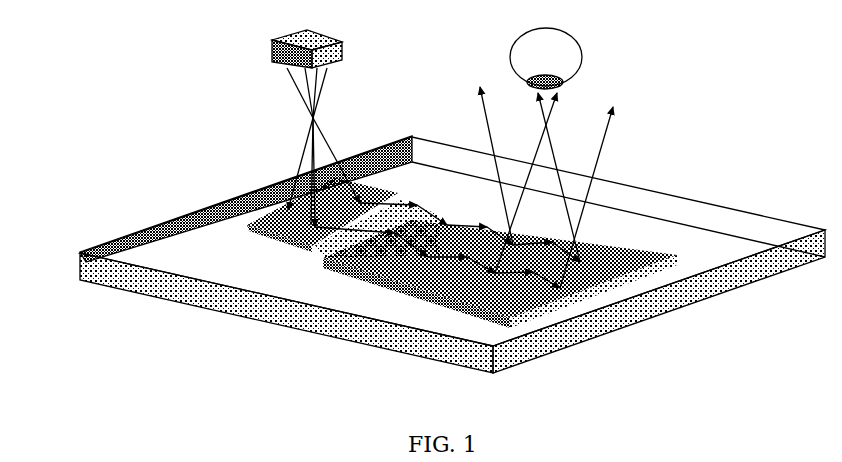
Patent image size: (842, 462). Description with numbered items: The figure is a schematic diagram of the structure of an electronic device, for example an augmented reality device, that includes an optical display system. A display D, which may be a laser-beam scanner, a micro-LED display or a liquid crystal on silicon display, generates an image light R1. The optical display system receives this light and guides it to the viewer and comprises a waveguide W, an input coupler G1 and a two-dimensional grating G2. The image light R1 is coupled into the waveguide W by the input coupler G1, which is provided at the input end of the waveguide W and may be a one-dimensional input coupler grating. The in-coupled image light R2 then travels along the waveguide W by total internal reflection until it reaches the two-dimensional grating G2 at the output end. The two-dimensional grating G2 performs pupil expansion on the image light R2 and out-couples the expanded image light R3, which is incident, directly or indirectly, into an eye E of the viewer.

The display D is at (307, 42).
The eye of a viewer E is at (557, 58).
The waveguide W is at (224, 250).
The input coupler G1 is at (287, 215).
The two-dimensional grating G2 is at (580, 283).
The image light R1 is at (323, 147).
The in-coupled image light R2 is at (447, 242).
The expanded image light R3 is at (559, 187).